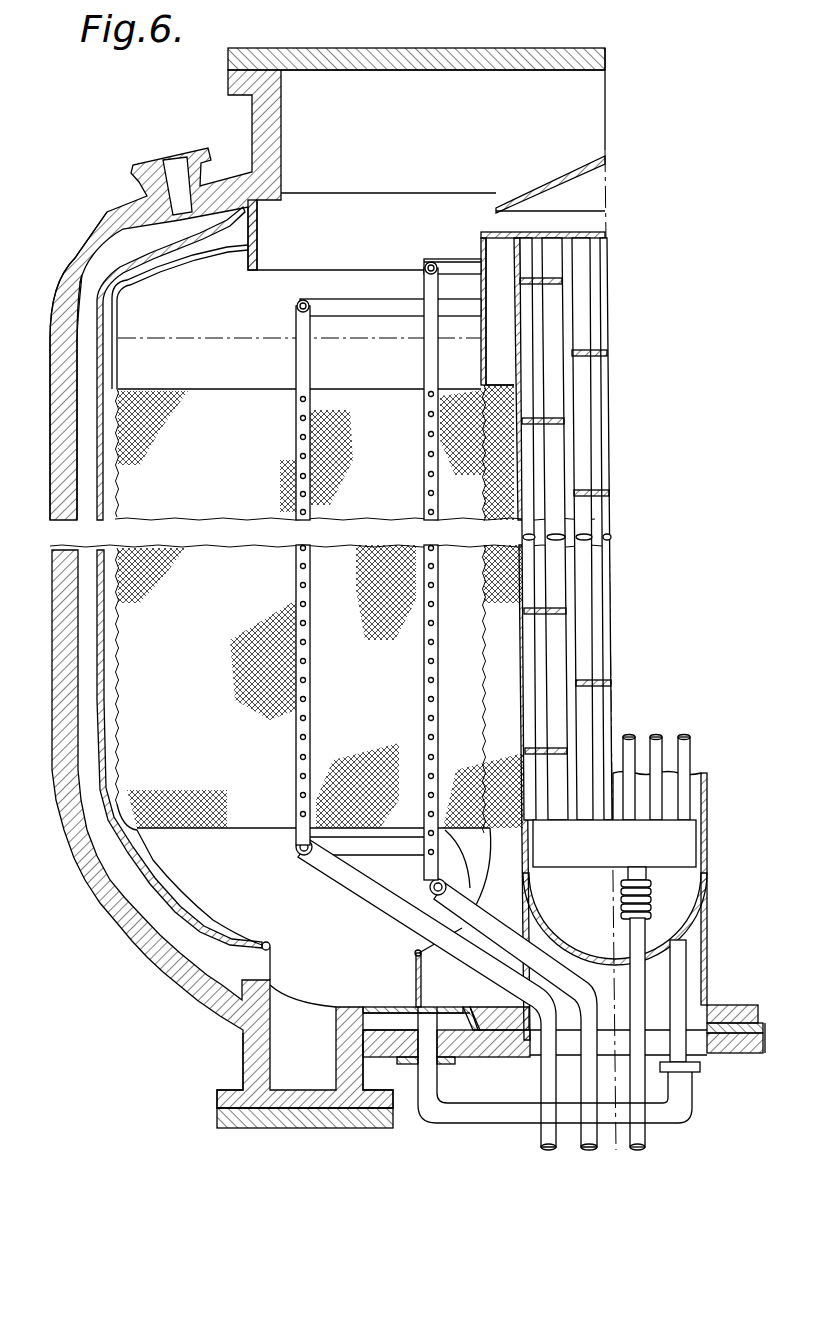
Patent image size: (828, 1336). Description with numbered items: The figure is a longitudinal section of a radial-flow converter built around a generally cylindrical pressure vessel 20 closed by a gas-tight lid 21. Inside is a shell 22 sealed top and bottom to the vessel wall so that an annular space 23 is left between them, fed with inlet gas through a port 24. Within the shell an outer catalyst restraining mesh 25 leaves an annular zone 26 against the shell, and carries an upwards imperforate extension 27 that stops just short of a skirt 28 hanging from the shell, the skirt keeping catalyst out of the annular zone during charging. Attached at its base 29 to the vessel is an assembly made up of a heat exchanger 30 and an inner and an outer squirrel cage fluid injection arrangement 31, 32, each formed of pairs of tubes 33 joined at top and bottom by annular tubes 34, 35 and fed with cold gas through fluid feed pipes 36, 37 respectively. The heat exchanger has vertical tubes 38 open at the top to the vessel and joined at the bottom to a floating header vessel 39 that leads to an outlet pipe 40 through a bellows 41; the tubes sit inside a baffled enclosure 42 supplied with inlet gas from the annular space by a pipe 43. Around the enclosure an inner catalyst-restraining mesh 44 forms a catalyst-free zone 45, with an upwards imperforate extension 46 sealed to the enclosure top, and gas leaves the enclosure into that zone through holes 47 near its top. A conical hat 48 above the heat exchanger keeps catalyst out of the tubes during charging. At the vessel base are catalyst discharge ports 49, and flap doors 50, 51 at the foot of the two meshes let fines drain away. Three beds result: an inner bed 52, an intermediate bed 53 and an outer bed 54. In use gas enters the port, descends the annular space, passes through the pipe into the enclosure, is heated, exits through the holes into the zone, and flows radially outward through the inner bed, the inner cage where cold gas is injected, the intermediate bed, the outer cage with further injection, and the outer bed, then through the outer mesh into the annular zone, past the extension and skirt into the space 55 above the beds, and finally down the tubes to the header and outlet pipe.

The pressure vessel 20 is at (58, 331).
The lid 21 is at (348, 54).
The shell 22 is at (93, 305).
The annular space 23 is at (83, 389).
The port 24 is at (160, 164).
The outer catalyst restraining mesh 25 is at (113, 635).
The annular zone 26 is at (110, 572).
The upwards imperforate extension 27 is at (143, 280).
The skirt 28 is at (259, 227).
The base 29 is at (493, 1007).
The heat exchanger 30 is at (518, 228).
The inner squirrel cage fluid injection arrangement 31 is at (418, 266).
The outer squirrel cage fluid injection arrangement 32 is at (290, 316).
The tubes 33 is at (296, 393).
The upper annular tube 34 is at (449, 264).
The lower annular tube 35 is at (463, 883).
The fluid feed pipe 36 is at (430, 898).
The fluid feed pipe 37 is at (350, 880).
The vertical tubes 38 is at (598, 260).
The floating header vessel 39 is at (583, 860).
The outlet pipe 40 is at (646, 1136).
The bellows 41 is at (658, 892).
The baffled enclosure 42 is at (517, 560).
The pipe 43 is at (500, 1118).
The inner catalyst-restraining mesh 44 is at (482, 469).
The catalyst-free zone 45 is at (503, 624).
The upwards imperforate extension 46 is at (484, 322).
The holes 47 is at (513, 253).
The conical hat 48 is at (572, 181).
The catalyst discharge ports 49 is at (248, 1060).
The flap door 50 is at (274, 990).
The flap door 51 is at (416, 970).
The inner catalyst bed 52 is at (486, 709).
The intermediate catalyst bed 53 is at (394, 701).
The outer catalyst bed 54 is at (229, 724).
The space 55 is at (417, 190).